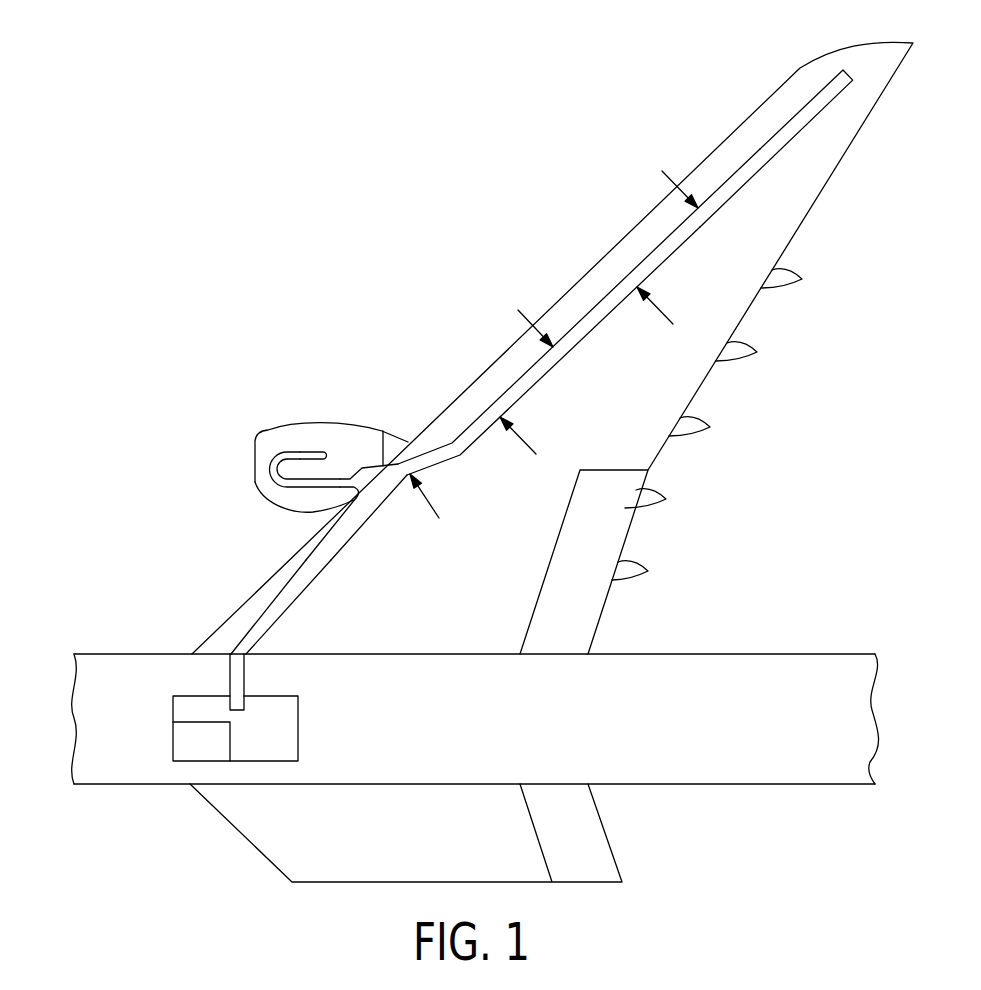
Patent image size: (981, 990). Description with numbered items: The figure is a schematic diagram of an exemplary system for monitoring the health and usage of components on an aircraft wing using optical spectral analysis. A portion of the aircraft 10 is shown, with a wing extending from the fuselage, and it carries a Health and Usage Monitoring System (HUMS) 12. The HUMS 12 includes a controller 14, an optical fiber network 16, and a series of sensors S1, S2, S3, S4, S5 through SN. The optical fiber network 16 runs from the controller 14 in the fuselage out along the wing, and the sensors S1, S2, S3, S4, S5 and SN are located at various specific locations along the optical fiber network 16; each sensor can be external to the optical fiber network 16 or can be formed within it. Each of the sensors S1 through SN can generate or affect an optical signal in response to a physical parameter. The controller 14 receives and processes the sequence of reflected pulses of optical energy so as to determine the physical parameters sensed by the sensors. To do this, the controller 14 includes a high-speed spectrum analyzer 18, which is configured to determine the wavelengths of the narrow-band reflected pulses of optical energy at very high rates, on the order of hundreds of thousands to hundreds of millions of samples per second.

The aircraft 10 is at (436, 274).
The Health and Usage Monitoring System (HUMS) 12 is at (117, 703).
The controller 14 is at (280, 728).
The optical fiber network 16 is at (586, 340).
The high-speed spectrum analyzer 18 is at (217, 755).
The sensor SN is at (808, 84).
The sensor S1 is at (304, 611).
The sensor S2 is at (359, 550).
The sensor S3 is at (368, 458).
The sensor S4 is at (260, 488).
The sensor S5 is at (363, 455).